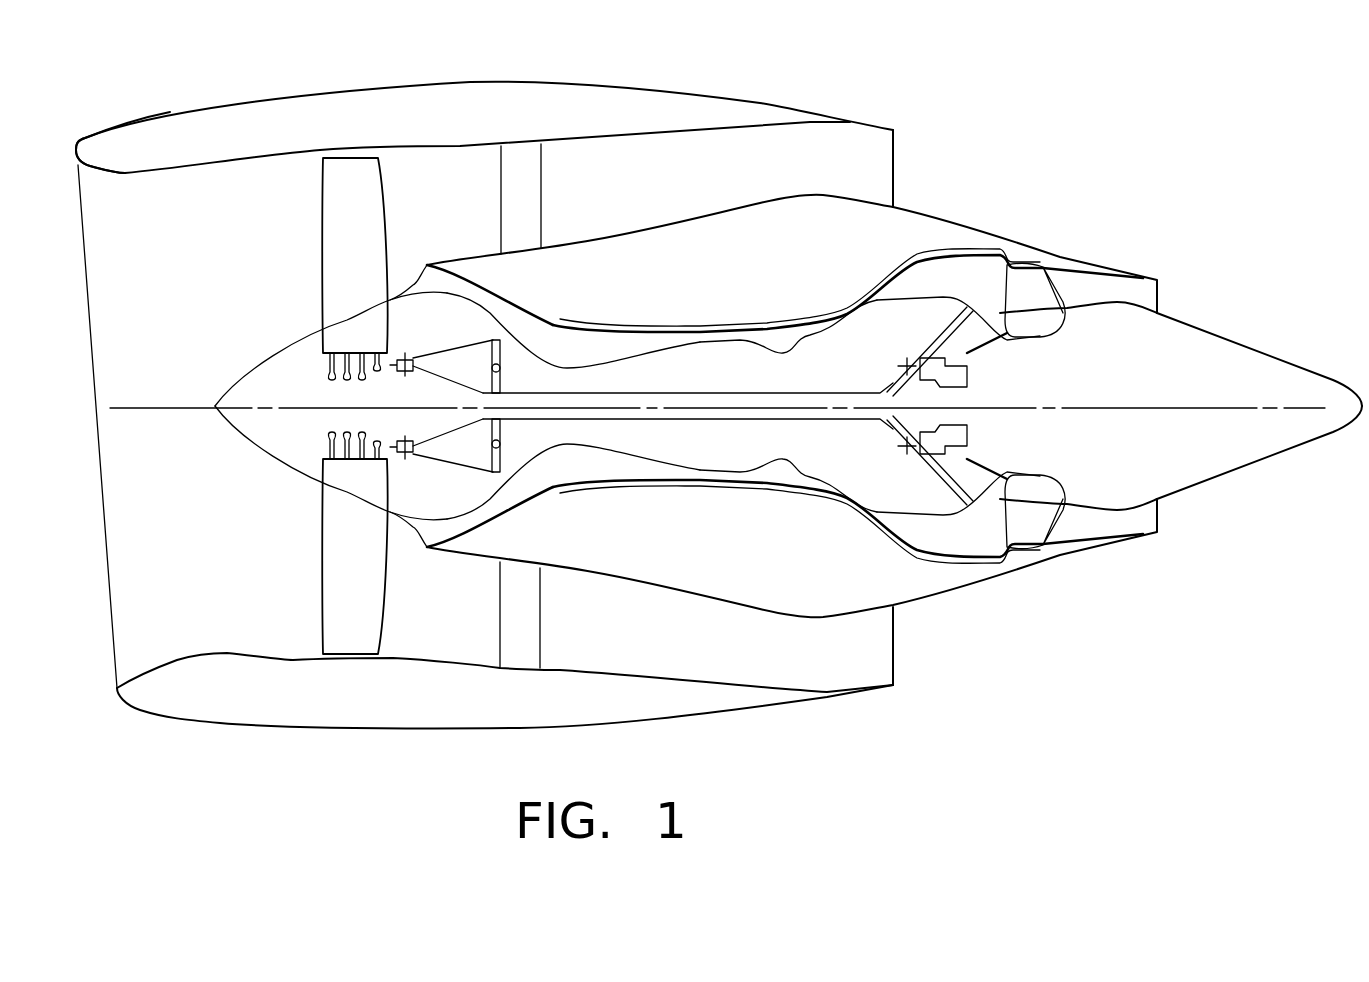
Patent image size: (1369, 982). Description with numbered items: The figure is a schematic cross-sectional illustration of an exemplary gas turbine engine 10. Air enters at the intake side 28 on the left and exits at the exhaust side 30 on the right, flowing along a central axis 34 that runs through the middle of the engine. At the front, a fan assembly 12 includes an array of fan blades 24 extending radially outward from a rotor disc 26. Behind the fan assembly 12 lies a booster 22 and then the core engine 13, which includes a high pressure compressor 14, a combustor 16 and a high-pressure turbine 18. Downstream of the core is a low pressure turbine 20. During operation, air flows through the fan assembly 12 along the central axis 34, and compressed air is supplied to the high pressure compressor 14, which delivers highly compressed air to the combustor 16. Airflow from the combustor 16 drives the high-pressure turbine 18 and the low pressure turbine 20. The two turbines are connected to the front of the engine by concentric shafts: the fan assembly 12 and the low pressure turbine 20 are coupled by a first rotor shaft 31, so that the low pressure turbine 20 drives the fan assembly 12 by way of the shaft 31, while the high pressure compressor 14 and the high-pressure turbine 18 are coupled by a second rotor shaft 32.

The gas turbine engine 10 is at (822, 60).
The fan assembly 12 is at (355, 556).
The core engine 13 is at (741, 225).
The high pressure compressor 14 is at (592, 344).
The combustor 16 is at (783, 340).
The high-pressure turbine 18 is at (830, 487).
The low pressure turbine 20 is at (930, 276).
The booster 22 is at (463, 282).
The fan blades 24 is at (332, 243).
The rotor disc 26 is at (347, 481).
The intake side 28 is at (50, 190).
The exhaust side 30 is at (940, 150).
The first rotor shaft 31 is at (643, 393).
The second rotor shaft 32 is at (620, 460).
The central axis 34 is at (1157, 405).